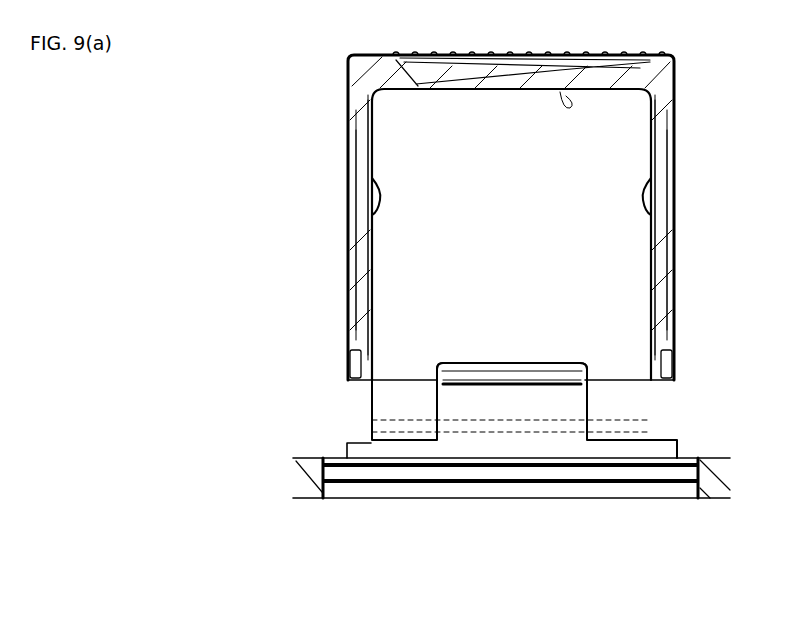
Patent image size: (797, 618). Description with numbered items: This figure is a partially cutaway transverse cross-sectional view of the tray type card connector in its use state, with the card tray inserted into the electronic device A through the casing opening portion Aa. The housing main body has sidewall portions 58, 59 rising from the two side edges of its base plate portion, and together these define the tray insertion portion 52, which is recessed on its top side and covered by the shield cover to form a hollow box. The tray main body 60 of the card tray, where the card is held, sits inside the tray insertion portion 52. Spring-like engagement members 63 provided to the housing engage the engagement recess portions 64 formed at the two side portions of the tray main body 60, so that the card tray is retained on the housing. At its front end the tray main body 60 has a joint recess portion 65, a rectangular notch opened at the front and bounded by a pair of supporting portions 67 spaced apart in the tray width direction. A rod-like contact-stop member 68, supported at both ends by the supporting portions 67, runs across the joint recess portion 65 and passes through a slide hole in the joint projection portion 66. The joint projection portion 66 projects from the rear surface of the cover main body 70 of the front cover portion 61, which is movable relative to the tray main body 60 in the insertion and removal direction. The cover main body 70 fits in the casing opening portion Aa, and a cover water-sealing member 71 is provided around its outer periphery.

The tray insertion portion 52 is at (566, 112).
The sidewall portion 58 is at (348, 190).
The sidewall portion 59 is at (674, 153).
The tray main body 60 is at (525, 234).
The front cover portion 61 is at (447, 498).
The engagement member 63 is at (348, 157).
The engagement recess portion 64 is at (347, 215).
The joint recess portion 65 is at (473, 363).
The joint projection portion 66 is at (573, 398).
The supporting portion 67 is at (372, 408).
The contact-stop member 68 is at (550, 428).
The cover main body 70 is at (627, 490).
The cover water-sealing member 71 is at (352, 474).
The electronic device A is at (298, 486).
The casing opening portion Aa is at (696, 482).